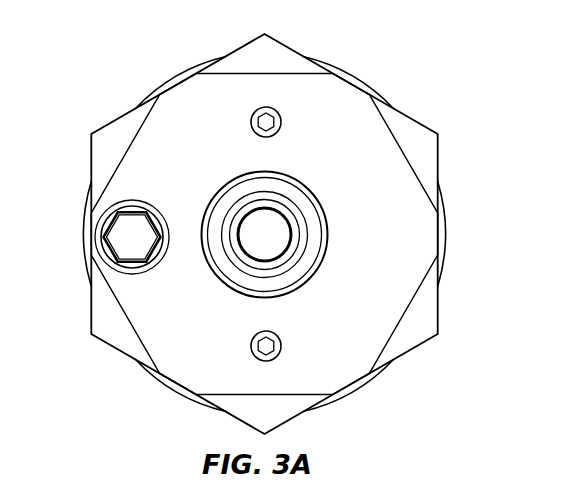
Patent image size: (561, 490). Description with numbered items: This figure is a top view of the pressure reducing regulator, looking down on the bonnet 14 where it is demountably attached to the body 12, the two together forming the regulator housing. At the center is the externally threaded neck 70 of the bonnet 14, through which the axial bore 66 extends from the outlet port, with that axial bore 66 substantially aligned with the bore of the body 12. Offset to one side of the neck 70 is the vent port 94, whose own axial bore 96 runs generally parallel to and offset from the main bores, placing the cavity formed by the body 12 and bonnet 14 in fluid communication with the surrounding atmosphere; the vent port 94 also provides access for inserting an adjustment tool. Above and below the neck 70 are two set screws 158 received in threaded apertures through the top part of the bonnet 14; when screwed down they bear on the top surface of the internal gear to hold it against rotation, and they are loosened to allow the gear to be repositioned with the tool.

The body 12 is at (446, 212).
The bonnet 14 is at (438, 128).
The axial bore 66 is at (262, 215).
The externally threaded neck 70 is at (223, 187).
The offset vent port 94 is at (130, 198).
The axial bore 96 is at (107, 217).
The set screws 158 is at (281, 124).